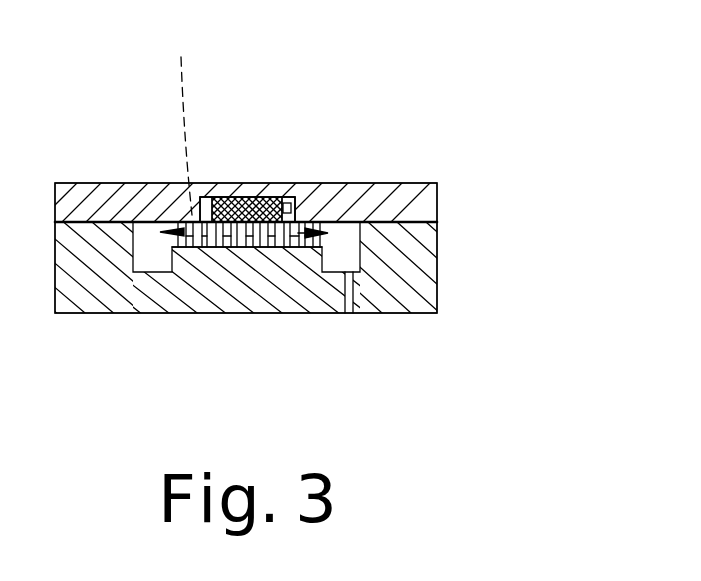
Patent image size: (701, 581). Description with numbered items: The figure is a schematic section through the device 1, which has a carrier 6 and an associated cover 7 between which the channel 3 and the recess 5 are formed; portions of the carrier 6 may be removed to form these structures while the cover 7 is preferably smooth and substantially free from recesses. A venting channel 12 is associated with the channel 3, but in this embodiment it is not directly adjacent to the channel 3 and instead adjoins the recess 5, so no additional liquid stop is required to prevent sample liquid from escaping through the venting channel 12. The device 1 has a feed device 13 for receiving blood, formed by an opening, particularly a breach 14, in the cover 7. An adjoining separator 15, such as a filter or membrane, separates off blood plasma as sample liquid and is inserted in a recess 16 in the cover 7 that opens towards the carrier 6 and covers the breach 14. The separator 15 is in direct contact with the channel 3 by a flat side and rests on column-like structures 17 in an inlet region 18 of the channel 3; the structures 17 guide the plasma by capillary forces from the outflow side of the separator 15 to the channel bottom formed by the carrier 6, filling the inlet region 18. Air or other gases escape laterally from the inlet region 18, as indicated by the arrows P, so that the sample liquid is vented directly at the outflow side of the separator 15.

The device 1 is at (240, 160).
The arrows P is at (189, 119).
The channel 3 is at (275, 203).
The recess 5 is at (150, 252).
The carrier 6 is at (415, 285).
The cover 7 is at (418, 210).
The venting channel 12 is at (360, 313).
The feed device 13 is at (251, 168).
The breach 14 is at (237, 195).
The separator 15 is at (262, 192).
The recess 16 is at (292, 222).
The column-like structures 17 is at (282, 230).
The inlet region 18 is at (299, 265).